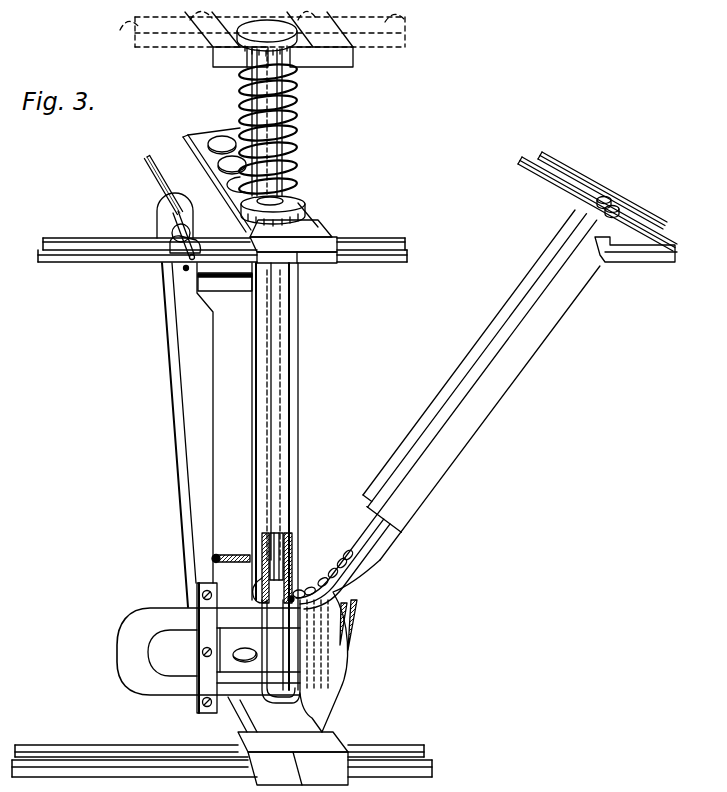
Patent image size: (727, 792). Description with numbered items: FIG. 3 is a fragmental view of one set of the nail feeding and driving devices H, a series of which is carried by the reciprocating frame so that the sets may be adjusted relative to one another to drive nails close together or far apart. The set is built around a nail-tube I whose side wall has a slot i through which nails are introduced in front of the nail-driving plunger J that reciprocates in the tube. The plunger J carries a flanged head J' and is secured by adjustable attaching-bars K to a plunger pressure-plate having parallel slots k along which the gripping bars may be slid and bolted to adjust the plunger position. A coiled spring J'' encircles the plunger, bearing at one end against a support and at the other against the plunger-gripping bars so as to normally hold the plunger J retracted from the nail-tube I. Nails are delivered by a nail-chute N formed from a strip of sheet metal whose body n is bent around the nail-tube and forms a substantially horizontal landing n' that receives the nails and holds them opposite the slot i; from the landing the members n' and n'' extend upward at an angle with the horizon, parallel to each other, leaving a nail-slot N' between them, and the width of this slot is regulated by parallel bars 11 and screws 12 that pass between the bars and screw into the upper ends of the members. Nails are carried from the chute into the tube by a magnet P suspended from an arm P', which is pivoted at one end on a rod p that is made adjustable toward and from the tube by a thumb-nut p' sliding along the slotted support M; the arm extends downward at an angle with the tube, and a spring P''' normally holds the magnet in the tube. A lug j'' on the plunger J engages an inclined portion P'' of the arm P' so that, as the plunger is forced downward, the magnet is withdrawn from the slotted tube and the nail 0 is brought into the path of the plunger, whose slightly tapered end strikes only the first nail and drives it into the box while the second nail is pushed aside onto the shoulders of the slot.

The adjustable attaching-bars K is at (269, 40).
The flanged head J' is at (267, 98).
The nail-driving plunger J is at (271, 332).
The coiled spring J'' is at (284, 171).
The lug j'' is at (225, 293).
The nail-tube I is at (302, 415).
The spring P''' is at (231, 542).
The body n is at (281, 661).
The magnet P is at (208, 670).
The nail 0 is at (254, 656).
The nail feeding and driving devices H is at (454, 530).
The nail-chute N is at (480, 387).
The member n'' is at (336, 553).
The landing n' is at (345, 564).
The nail-slot N' is at (329, 560).
The slot i is at (300, 591).
The bars 11 is at (640, 228).
The screws 12 is at (613, 202).
The slotted support M is at (116, 240).
The rod p is at (163, 185).
The thumb-nut p' is at (187, 226).
The arm P' is at (163, 435).
The inclined portion P'' is at (196, 423).
The slots k is at (254, 24).